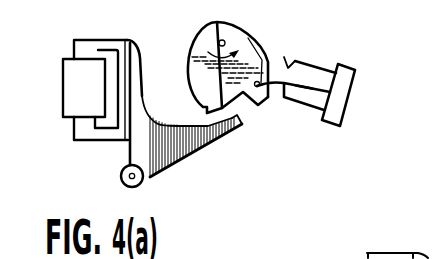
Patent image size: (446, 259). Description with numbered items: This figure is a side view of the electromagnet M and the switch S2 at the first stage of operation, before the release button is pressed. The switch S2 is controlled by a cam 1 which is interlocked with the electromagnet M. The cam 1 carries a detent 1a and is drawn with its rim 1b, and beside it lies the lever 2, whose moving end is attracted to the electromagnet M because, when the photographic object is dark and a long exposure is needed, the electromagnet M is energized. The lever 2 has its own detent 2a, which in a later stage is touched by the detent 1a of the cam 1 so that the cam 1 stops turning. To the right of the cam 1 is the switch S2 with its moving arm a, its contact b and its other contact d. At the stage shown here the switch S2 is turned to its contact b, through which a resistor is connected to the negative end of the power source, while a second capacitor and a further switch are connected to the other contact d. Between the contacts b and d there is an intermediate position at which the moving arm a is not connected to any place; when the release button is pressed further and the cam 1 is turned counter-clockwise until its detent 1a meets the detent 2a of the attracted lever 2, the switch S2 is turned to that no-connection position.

The cam 1 is at (252, 40).
The detent 1a is at (244, 95).
The cam rim 1b is at (263, 58).
The lever 2 is at (128, 151).
The detent 2a is at (241, 128).
The moving arm a is at (303, 82).
The contact b is at (309, 111).
The contact d is at (304, 60).
The switch S2 is at (354, 86).
The electromagnet M is at (84, 88).